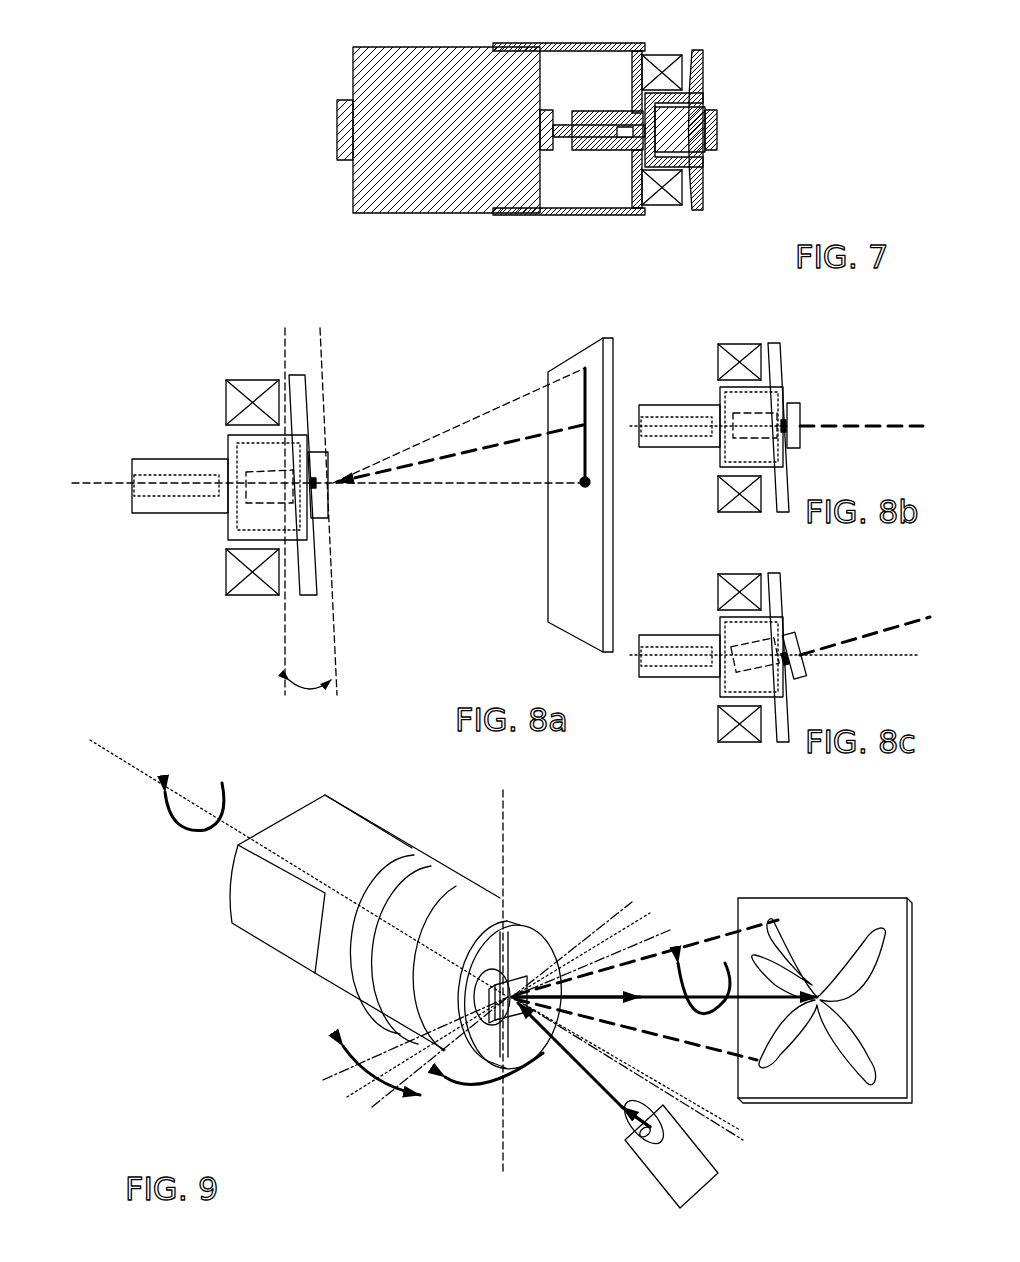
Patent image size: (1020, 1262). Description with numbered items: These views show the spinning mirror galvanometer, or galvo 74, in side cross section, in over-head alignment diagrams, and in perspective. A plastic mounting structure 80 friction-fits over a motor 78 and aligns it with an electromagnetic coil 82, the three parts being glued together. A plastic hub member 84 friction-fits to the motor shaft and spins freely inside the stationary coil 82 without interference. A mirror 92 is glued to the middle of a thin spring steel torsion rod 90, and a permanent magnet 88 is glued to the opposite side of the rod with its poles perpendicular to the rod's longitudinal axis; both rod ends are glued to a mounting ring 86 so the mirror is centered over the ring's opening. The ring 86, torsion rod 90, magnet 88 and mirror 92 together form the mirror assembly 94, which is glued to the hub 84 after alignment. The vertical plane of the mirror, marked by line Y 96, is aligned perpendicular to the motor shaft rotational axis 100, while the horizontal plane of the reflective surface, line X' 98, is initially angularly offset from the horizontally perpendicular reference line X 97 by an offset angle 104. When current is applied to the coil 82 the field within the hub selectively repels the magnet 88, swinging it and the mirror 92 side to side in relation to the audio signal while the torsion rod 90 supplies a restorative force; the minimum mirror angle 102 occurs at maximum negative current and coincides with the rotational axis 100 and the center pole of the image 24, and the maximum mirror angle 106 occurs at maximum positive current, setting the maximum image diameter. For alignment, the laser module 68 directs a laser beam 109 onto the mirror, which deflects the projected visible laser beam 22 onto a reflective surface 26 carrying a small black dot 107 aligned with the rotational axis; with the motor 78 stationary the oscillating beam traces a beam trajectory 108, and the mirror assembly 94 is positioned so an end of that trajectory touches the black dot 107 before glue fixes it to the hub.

In FIG. 7, the galvo 74 is at (380, 225).
In FIG. 9, the galvo 74 is at (225, 945).
In FIG. 7, the motor 78 is at (410, 200).
In FIG. 7, the mounting structure 80 is at (557, 213).
In FIG. 7, the electromagnetic coil 82 is at (660, 205).
In FIG. 8A, the electromagnetic coil 82 is at (233, 409).
In FIG. 7, the hub member 84 is at (608, 148).
In FIG. 8A, the hub member 84 is at (160, 467).
In FIG. 7, the mounting ring 86 is at (696, 202).
In FIG. 8A, the mounting ring 86 is at (298, 385).
In FIG. 7, the permanent magnet 88 is at (677, 133).
In FIG. 8A, the permanent magnet 88 is at (257, 492).
In FIG. 7, the torsion rod 90 is at (700, 106).
In FIG. 8A, the torsion rod 90 is at (312, 488).
In FIG. 7, the mirror 92 is at (718, 138).
In FIG. 8A, the mirror 92 is at (327, 508).
In FIG. 7, the mirror assembly 94 is at (712, 58).
In FIG. 8A, the mirror assembly 94 is at (314, 598).
In FIG. 8A, the line X 97 is at (283, 637).
In FIG. 8A, the line X' 98 is at (338, 663).
In FIG. 8A, the motor shaft rotational axis 100 is at (118, 485).
In FIG. 9, the motor shaft rotational axis 100 is at (127, 763).
In FIG. 8A, the minimum mirror angle 102 is at (412, 485).
In FIG. 8B, the minimum mirror angle 102 is at (858, 423).
In FIG. 9, the minimum mirror angle 102 is at (343, 1072).
In FIG. 8A, the offset angle 104 is at (483, 448).
In FIG. 9, the offset angle 104 is at (640, 918).
In FIG. 8A, the maximum mirror angle 106 is at (438, 432).
In FIG. 8C, the maximum mirror angle 106 is at (853, 638).
In FIG. 9, the maximum mirror angle 106 is at (387, 1092).
In FIG. 8A, the black dot 107 is at (583, 487).
In FIG. 8A, the beam trajectory 108 is at (583, 408).
In FIG. 8A, the reflective surface 26 is at (577, 600).
In FIG. 9, the reflective surface 26 is at (840, 1083).
In FIG. 9, the line Y 96 is at (503, 862).
In FIG. 9, the projected visible laser beam 22 is at (687, 945).
In FIG. 9, the image 24 is at (865, 937).
In FIG. 9, the laser beam 109 is at (595, 1082).
In FIG. 9, the laser module 68 is at (667, 1155).